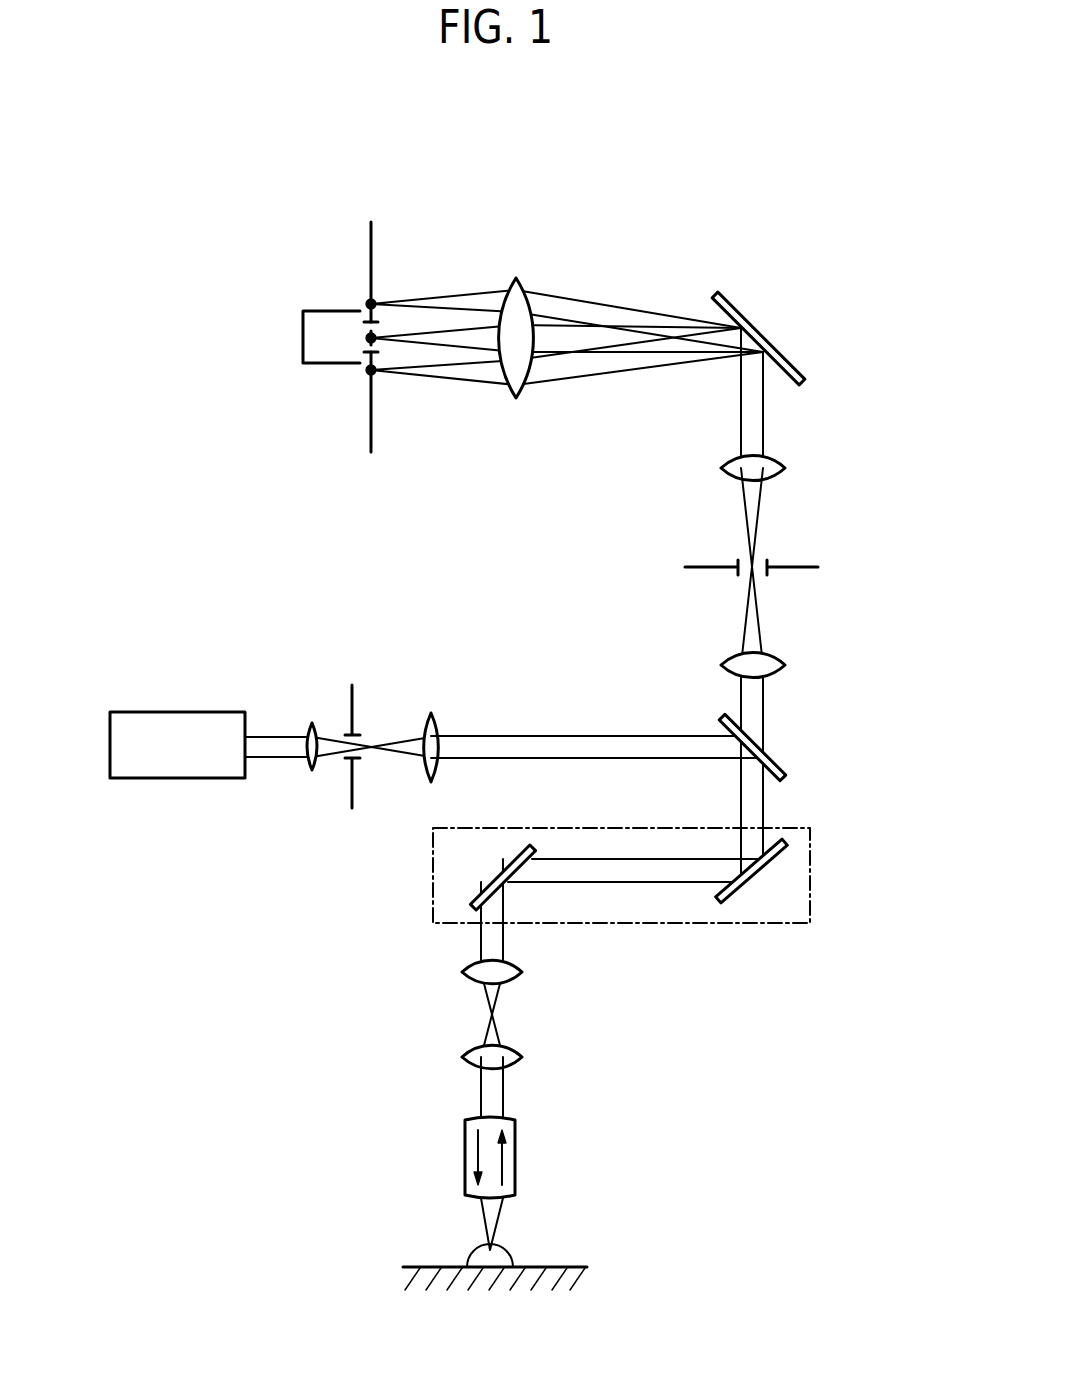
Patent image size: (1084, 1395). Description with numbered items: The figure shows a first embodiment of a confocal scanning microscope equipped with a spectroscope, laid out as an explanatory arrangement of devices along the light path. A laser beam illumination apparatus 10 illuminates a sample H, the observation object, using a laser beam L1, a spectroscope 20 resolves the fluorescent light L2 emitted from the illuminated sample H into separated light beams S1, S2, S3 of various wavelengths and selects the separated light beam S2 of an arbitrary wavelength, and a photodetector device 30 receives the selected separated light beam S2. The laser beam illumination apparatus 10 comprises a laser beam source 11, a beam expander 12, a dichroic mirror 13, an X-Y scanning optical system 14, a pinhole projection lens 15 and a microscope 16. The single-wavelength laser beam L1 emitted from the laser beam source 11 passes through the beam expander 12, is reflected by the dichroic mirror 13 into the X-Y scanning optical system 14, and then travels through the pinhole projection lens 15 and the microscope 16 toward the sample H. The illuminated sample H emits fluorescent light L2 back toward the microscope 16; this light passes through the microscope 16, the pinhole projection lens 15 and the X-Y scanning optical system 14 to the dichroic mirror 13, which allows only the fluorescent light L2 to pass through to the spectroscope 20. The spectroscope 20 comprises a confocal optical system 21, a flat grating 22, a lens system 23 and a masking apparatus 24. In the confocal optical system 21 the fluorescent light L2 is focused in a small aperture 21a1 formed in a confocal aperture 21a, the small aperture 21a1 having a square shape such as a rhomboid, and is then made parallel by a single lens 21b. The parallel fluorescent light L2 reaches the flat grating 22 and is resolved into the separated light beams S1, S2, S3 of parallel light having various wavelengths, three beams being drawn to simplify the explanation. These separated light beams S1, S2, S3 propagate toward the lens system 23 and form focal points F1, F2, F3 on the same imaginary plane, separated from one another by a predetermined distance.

The laser beam illumination apparatus 10 is at (163, 652).
The laser beam source 11 is at (200, 775).
The beam expander 12 is at (452, 678).
The dichroic mirror 13 is at (784, 768).
The X-Y scanning optical system 14 is at (663, 923).
The pinhole projection lens 15 is at (468, 965).
The microscope 16 is at (575, 1038).
The spectroscope 20 is at (805, 278).
The confocal optical system 21 is at (846, 457).
The confocal aperture 21a is at (707, 570).
The small aperture 21a1 is at (747, 563).
The single lens 21b is at (773, 456).
The flat grating 22 is at (738, 300).
The lens system 23 is at (520, 278).
The masking apparatus 24 is at (373, 242).
The photodetector device 30 is at (302, 332).
The focal point F1 is at (375, 302).
The focal point F2 is at (363, 338).
The focal point F3 is at (367, 372).
The separated light beam S1 is at (555, 308).
The separated light beam S2 is at (592, 337).
The separated light beam S3 is at (572, 370).
The laser beam L1 is at (592, 745).
The fluorescent light L2 is at (756, 705).
The sample H is at (504, 1257).